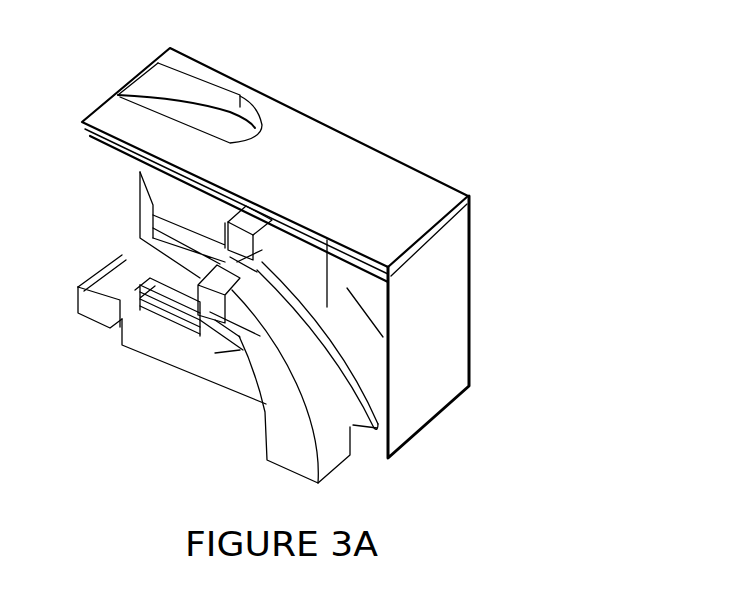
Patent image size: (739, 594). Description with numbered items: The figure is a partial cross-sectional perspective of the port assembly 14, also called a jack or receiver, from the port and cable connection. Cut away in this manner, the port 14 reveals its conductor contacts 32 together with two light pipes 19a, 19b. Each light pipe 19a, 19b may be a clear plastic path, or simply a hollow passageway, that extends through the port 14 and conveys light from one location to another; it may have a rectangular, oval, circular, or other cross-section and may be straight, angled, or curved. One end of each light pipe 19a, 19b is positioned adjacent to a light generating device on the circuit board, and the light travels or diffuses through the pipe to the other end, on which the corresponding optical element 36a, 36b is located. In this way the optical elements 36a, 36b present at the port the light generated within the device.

The port assembly 14 is at (357, 138).
The light pipe 19a is at (363, 427).
The light pipe 19b is at (268, 430).
The conductor contacts 32 is at (152, 302).
The optical element 36a is at (250, 243).
The optical element 36b is at (200, 338).